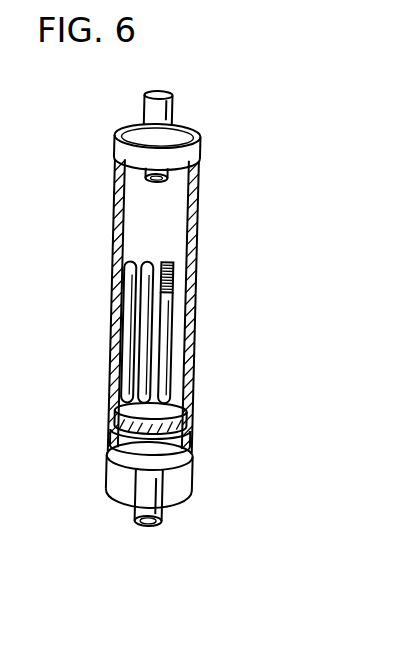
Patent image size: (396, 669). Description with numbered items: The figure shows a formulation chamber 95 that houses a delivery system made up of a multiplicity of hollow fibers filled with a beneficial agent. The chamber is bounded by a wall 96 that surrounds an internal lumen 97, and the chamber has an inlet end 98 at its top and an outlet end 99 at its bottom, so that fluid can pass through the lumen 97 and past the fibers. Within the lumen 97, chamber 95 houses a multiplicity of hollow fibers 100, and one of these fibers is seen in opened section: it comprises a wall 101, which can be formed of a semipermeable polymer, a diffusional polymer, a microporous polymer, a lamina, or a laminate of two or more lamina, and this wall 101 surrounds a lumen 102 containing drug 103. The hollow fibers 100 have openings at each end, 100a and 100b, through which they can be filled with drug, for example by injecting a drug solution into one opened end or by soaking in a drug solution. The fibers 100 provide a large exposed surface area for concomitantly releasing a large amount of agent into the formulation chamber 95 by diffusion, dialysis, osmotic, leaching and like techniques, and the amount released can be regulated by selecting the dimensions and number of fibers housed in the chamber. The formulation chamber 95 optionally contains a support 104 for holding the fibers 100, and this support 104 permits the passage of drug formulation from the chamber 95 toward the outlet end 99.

The formulation chamber 95 is at (202, 199).
The wall 96 is at (192, 232).
The internal lumen 97 is at (131, 206).
The inlet end 98 is at (112, 141).
The outlet end 99 is at (113, 450).
The hollow fibers 100 is at (125, 340).
The opening at one end of hollow fiber 100a is at (165, 262).
The opening at other end of hollow fiber 100b is at (185, 414).
The wall of hollow fiber 101 is at (172, 268).
The lumen of hollow fiber 102 is at (172, 284).
The drug 103 is at (172, 290).
The support 104 is at (188, 442).